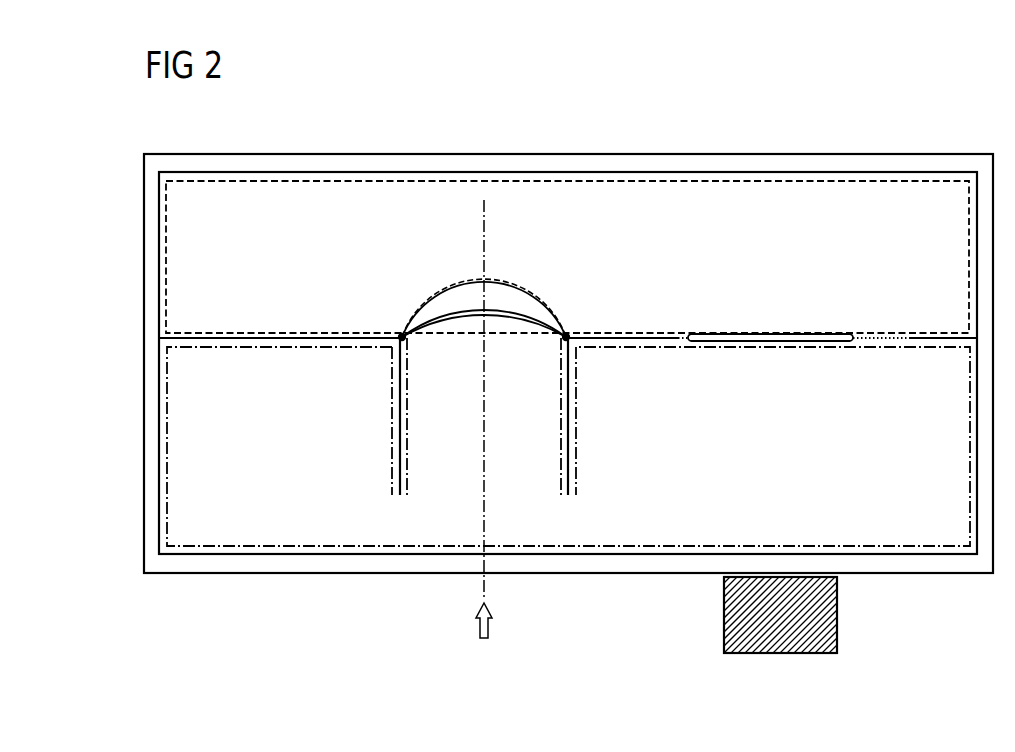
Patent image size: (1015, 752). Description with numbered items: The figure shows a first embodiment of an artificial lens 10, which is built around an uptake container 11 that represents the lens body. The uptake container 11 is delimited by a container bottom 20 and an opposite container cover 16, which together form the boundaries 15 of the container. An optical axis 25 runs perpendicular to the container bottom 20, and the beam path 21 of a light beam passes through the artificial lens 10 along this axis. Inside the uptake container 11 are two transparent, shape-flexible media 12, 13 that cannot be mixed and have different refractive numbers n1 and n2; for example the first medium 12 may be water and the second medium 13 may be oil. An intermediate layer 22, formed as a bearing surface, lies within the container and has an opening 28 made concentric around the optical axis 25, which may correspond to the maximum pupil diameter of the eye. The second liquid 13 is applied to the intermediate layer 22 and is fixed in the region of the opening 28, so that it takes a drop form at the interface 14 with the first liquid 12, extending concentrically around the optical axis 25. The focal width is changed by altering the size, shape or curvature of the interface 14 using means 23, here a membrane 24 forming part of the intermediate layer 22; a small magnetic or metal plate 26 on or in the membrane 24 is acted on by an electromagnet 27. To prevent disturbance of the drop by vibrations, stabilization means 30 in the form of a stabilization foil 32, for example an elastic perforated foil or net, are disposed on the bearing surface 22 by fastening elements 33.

The artificial lens 10 is at (128, 146).
The uptake container 11 is at (132, 280).
The first medium 12 is at (318, 249).
The second medium 13 is at (318, 474).
The interface 14 is at (448, 283).
The boundaries 15 is at (365, 140).
The container cover 16 is at (723, 160).
The container bottom 20 is at (285, 573).
The beam path 21 is at (489, 632).
The intermediate layer 22 is at (285, 338).
The means for changing the interface 23 is at (686, 304).
The membrane 24 is at (672, 346).
The optical axis 25 is at (487, 208).
The small magnetic or metal plate 26 is at (828, 334).
The electromagnet 27 is at (837, 620).
The opening 28 is at (501, 361).
The stabilization means 30 is at (404, 282).
The stabilization foil 32 is at (524, 281).
The fastening elements 33 is at (400, 335).